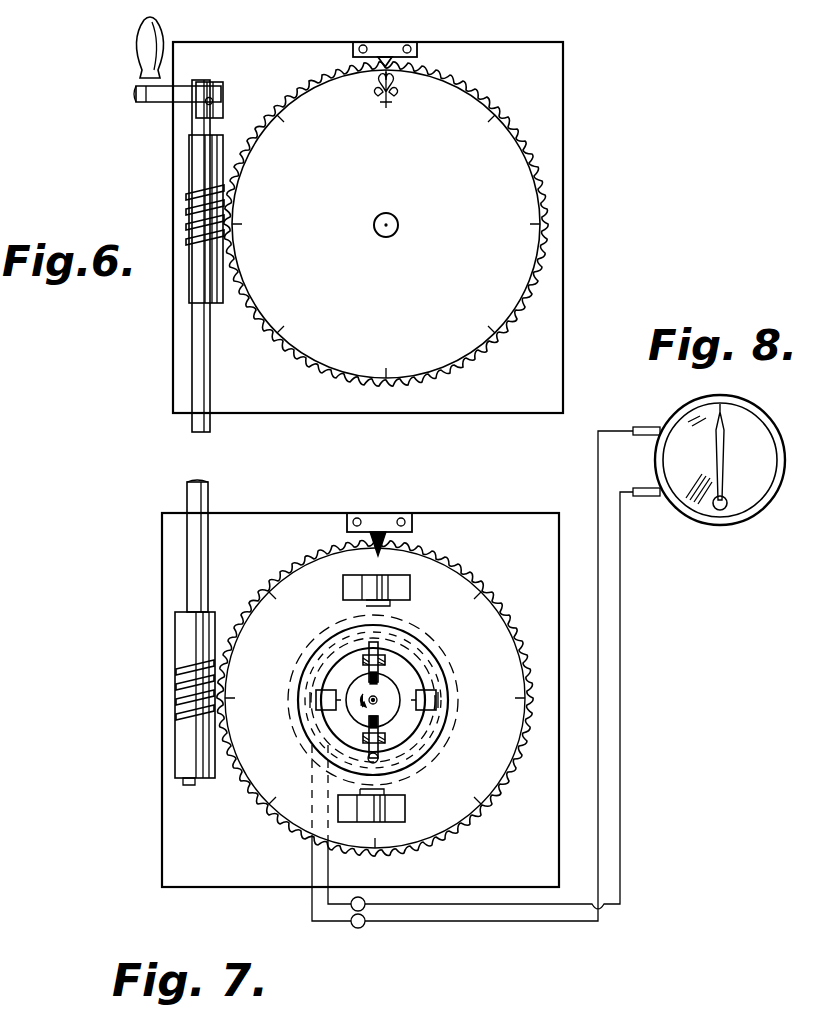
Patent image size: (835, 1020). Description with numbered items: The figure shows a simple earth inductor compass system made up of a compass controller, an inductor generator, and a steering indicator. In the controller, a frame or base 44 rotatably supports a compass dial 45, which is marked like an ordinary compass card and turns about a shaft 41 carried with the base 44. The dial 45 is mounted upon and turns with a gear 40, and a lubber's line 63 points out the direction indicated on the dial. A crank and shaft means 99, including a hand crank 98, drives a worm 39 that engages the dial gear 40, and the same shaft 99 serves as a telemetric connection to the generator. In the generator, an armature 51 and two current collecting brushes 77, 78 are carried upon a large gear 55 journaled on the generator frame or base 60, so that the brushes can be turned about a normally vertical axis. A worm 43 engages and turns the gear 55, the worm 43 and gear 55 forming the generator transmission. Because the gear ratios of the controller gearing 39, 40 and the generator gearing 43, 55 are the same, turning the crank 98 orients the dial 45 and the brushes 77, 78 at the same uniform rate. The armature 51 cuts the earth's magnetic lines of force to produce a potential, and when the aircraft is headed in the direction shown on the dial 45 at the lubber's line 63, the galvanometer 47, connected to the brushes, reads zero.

In FIG. 6, the worm 39 is at (188, 233).
In FIG. 6, the dial gear 40 is at (545, 244).
In FIG. 6, the shaft 41 is at (390, 218).
In FIG. 6, the controller frame or base 44 is at (555, 306).
In FIG. 6, the compass dial 45 is at (522, 190).
In FIG. 6, the lubber's line 63 is at (384, 46).
In FIG. 6, the crank 98 is at (143, 50).
In FIG. 6, the crank and shaft means 99 is at (193, 386).
In FIG. 7, the crank and shaft means 99 is at (195, 582).
In FIG. 7, the worm 43 is at (190, 706).
In FIG. 7, the generator armature 51 is at (405, 678).
In FIG. 7, the gear 55 is at (447, 560).
In FIG. 7, the inductor generator frame or base 60 is at (515, 528).
In FIG. 7, the brush 77 is at (380, 660).
In FIG. 7, the brush 78 is at (380, 752).
In FIG. 8, the galvanometer 47 is at (700, 505).